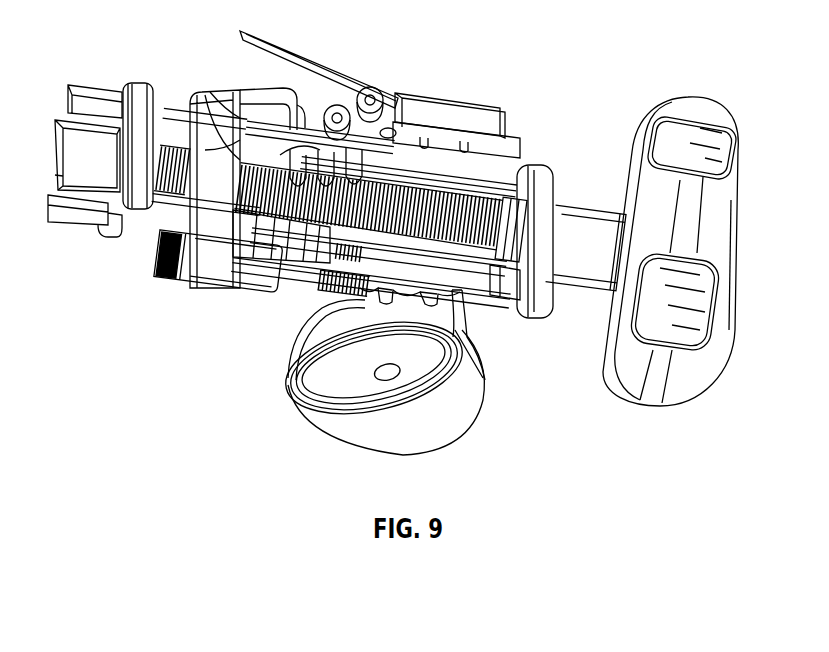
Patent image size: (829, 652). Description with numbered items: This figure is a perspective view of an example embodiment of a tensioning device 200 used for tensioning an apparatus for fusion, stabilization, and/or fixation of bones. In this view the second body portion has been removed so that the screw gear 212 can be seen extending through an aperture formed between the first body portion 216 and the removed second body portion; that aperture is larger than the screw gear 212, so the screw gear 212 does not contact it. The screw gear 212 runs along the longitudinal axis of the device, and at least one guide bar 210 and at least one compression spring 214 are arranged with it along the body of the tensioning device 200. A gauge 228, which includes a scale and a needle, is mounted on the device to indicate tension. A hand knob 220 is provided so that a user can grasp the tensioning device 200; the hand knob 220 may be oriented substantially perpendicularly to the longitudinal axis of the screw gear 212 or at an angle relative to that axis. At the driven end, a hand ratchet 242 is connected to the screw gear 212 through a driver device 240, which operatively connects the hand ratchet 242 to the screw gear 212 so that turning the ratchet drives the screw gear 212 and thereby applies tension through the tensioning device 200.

The tensioning device 200 is at (215, 72).
The guide bar 210 is at (548, 185).
The screw gear 212 is at (485, 215).
The compression spring 214 is at (300, 165).
The first body portion 216 is at (428, 130).
The hand knob 220 is at (470, 405).
The gauge 228 is at (372, 76).
The driver device 240 is at (612, 232).
The hand ratchet 242 is at (702, 125).